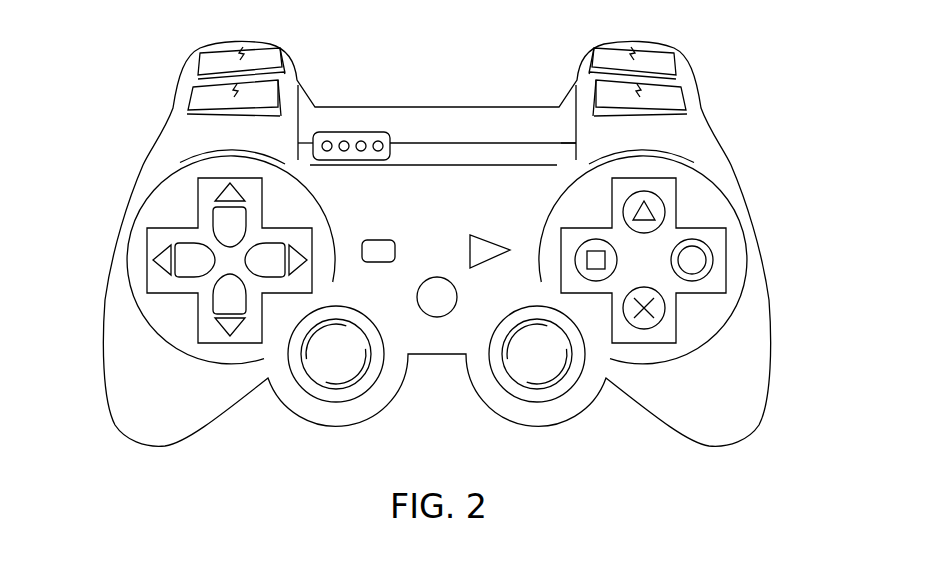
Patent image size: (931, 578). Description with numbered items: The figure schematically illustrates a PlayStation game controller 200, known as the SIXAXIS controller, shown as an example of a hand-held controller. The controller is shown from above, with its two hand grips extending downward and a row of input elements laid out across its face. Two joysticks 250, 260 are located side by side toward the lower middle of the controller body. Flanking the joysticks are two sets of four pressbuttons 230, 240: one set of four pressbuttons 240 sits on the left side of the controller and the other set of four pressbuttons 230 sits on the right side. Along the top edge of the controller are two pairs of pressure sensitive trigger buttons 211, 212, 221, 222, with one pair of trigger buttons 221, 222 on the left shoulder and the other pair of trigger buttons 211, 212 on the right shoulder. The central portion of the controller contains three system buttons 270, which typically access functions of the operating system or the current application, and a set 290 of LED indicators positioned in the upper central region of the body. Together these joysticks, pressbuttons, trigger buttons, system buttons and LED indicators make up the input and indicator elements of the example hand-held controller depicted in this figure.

The game controller 200 is at (738, 490).
The pressure sensitive trigger button 211 is at (675, 97).
The pressure sensitive trigger button 212 is at (667, 62).
The pressure sensitive trigger button 221 is at (198, 95).
The pressure sensitive trigger button 222 is at (221, 55).
The set of four pressbuttons 230 is at (717, 307).
The set of four pressbuttons 240 is at (155, 307).
The joystick 250 is at (337, 402).
The joystick 260 is at (535, 403).
The system buttons 270 is at (490, 236).
The set of LED indicators 290 is at (352, 132).